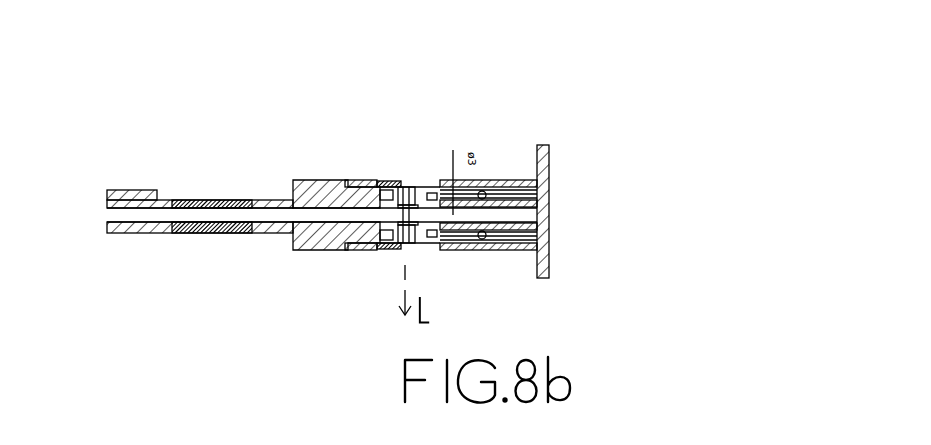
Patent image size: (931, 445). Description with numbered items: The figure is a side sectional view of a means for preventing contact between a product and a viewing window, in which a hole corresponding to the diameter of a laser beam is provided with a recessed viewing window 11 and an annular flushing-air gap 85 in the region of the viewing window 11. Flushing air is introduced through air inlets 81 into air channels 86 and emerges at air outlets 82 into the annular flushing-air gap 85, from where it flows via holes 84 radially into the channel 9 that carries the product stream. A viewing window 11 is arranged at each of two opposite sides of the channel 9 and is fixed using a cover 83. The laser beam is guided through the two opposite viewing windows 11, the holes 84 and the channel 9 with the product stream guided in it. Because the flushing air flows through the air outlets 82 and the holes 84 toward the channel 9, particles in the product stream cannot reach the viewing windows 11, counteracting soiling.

The channel 9 is at (322, 244).
The viewing window 11 is at (360, 201).
The air inlet 81 is at (517, 198).
The air outlet 82 is at (425, 145).
The cover 83 is at (309, 178).
The hole 84 is at (432, 247).
The annular flushing-air gap 85 is at (433, 172).
The air channel 86 is at (491, 187).